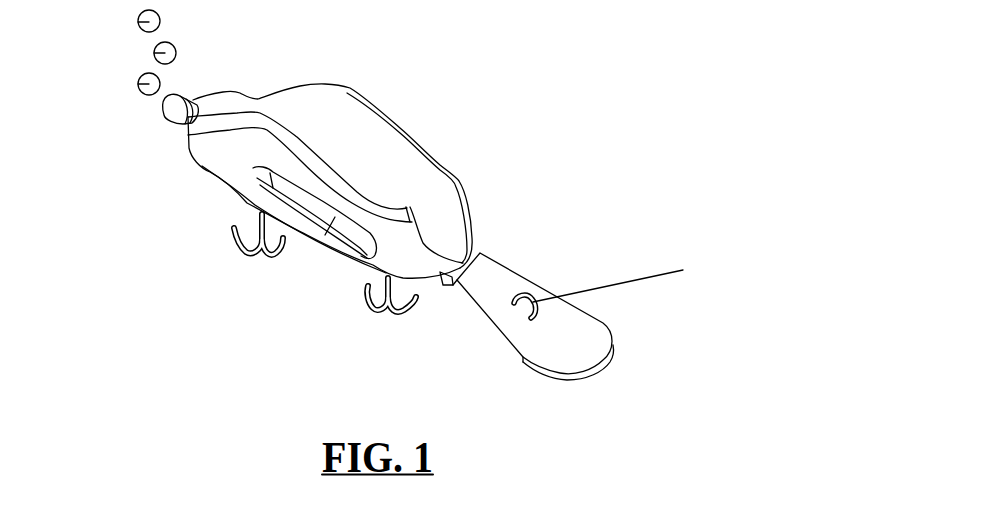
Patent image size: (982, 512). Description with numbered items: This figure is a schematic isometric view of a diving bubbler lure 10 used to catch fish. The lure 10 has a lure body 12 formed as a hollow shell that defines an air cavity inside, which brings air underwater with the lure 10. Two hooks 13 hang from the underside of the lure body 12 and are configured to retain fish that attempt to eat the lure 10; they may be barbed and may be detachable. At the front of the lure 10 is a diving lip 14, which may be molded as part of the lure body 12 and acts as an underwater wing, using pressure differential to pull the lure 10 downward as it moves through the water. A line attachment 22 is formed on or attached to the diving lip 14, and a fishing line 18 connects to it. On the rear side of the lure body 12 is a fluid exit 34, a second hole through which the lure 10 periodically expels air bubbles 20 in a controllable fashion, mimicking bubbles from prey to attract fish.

The lure 10 is at (530, 89).
The lure body 12 is at (332, 103).
The hooks 13 is at (232, 234).
The diving lip 14 is at (502, 280).
The line 18 is at (607, 285).
The air bubbles 20 is at (138, 22).
The line attachment 22 is at (514, 305).
The fluid exit 34 is at (163, 98).